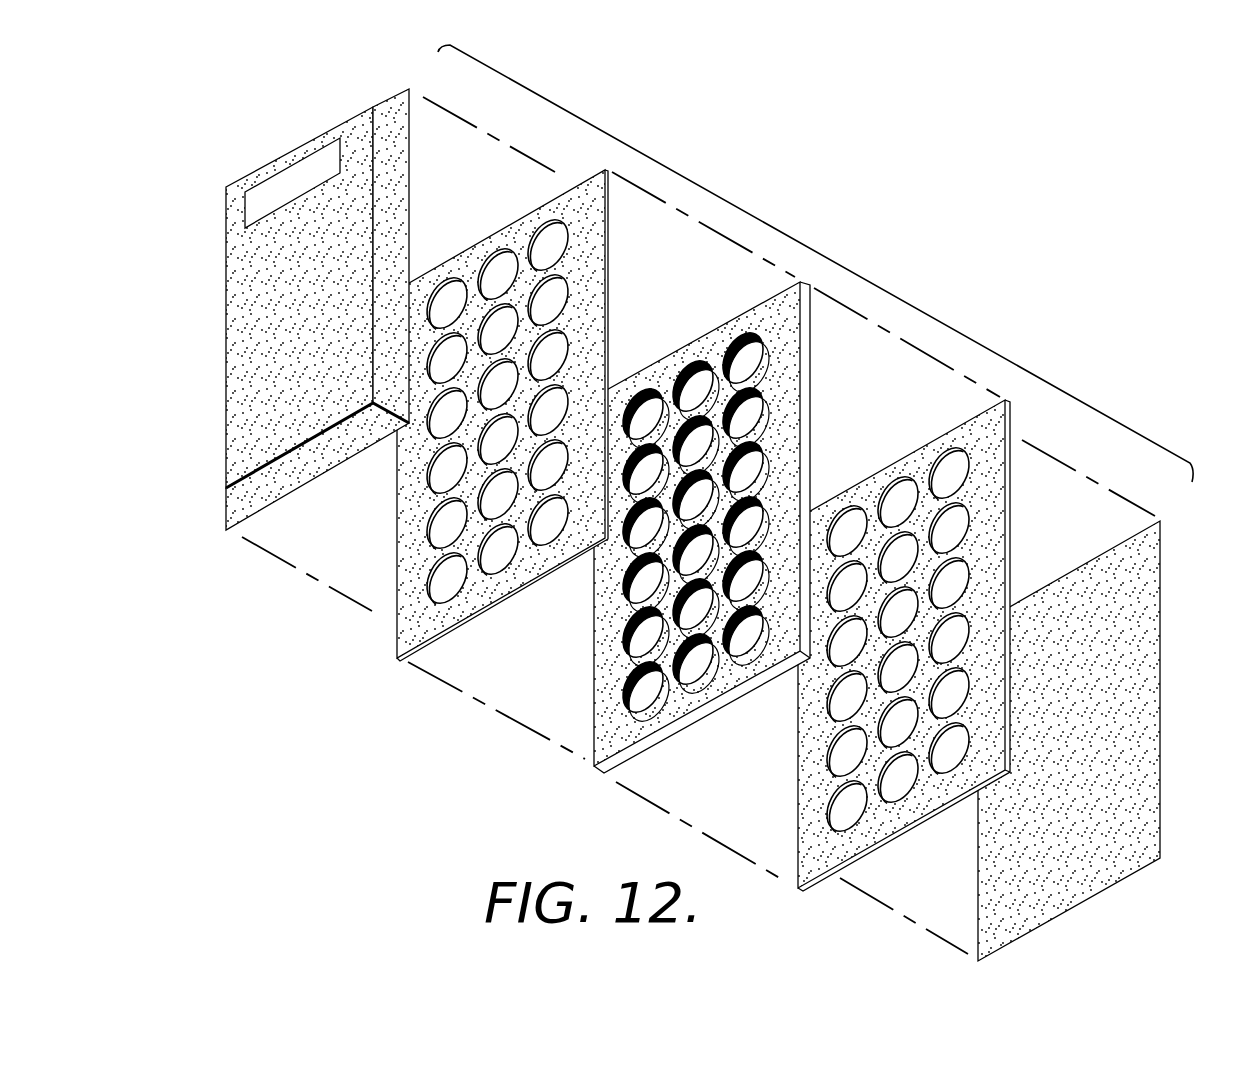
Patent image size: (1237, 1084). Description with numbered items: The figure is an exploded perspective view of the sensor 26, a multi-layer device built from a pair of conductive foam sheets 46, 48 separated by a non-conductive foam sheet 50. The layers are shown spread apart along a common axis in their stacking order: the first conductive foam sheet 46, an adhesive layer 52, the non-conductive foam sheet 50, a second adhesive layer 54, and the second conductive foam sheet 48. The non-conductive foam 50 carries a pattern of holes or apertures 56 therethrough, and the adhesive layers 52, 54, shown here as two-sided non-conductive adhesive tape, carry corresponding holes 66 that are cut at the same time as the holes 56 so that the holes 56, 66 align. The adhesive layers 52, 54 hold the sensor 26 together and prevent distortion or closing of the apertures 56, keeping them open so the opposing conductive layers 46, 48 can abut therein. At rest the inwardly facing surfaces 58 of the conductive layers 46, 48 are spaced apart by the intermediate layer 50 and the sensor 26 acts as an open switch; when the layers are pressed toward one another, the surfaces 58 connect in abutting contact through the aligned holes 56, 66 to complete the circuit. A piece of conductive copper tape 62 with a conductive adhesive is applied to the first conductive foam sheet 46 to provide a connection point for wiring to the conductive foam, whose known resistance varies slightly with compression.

The sensor 26 is at (693, 503).
The conductive foam sheet 46 is at (291, 309).
The conductive foam sheet 48 is at (1095, 741).
The non-conductive foam sheet 50 is at (597, 660).
The adhesive layer 52 is at (397, 632).
The adhesive layer 54 is at (798, 791).
The holes or apertures 56 is at (642, 690).
The inwardly facing surfaces 58 is at (1100, 875).
The conductive copper tape 62 is at (290, 176).
The holes 66 is at (438, 592).